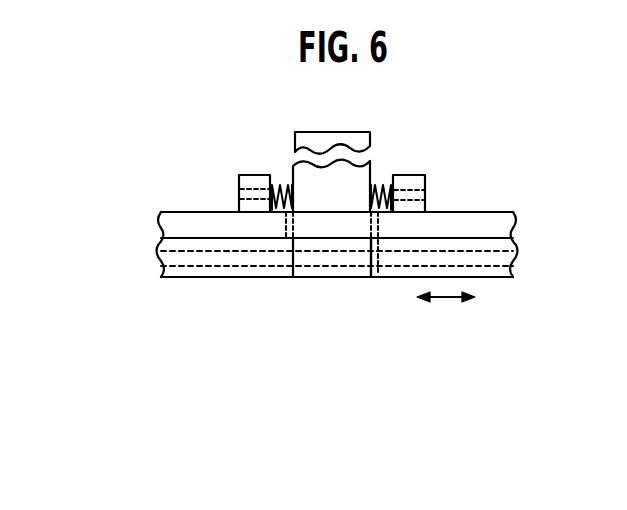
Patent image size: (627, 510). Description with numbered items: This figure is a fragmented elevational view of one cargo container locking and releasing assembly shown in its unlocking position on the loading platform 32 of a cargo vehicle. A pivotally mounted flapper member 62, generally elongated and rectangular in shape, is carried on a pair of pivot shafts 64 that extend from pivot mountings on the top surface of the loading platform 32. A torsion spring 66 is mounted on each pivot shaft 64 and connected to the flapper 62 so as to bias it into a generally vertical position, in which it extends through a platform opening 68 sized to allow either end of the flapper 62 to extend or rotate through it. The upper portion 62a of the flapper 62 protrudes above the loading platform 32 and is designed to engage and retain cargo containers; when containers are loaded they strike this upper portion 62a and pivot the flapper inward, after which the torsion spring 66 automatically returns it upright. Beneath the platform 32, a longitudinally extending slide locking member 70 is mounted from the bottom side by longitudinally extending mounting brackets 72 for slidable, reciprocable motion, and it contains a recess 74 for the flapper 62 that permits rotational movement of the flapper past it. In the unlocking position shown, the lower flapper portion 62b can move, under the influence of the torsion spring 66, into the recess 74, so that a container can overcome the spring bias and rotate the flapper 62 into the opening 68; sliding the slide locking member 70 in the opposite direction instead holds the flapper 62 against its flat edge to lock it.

The loading platform 32 is at (475, 228).
The flapper member 62 is at (336, 224).
The upper portion of the flapper 62a is at (340, 132).
The lower flapper portion 62b is at (352, 277).
The pivot shaft 64 is at (239, 192).
The torsion spring 66 is at (287, 183).
The platform opening 68 is at (381, 255).
The slide locking member 70 is at (292, 278).
The mounting bracket 72 is at (191, 268).
The recess 74 is at (365, 277).